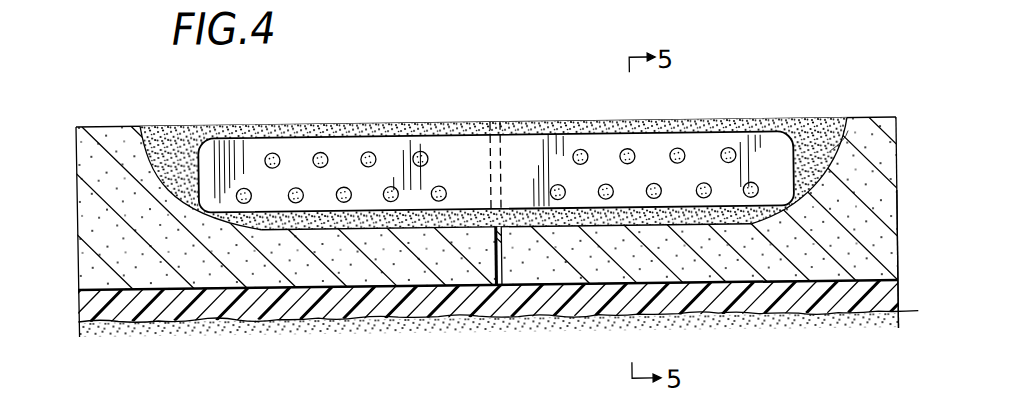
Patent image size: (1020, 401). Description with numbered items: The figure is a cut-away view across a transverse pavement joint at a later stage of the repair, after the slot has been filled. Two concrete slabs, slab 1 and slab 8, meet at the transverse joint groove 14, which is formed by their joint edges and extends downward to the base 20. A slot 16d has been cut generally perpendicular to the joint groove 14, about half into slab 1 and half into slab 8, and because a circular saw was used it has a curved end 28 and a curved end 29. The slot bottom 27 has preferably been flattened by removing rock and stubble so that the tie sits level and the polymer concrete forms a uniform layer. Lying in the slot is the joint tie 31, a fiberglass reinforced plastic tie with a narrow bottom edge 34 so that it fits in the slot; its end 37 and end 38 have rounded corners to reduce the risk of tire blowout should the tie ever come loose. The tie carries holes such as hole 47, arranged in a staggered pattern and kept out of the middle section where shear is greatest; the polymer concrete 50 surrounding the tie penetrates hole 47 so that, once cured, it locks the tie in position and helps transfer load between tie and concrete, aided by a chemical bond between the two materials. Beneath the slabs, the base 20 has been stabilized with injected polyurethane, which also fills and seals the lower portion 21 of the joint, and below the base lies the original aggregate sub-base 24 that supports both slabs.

The slab 1 is at (93, 157).
The slab 8 is at (898, 203).
The transverse joint groove 14 is at (493, 128).
The slot 16d is at (710, 130).
The base 20 is at (857, 307).
The lower portion of joint 21 is at (514, 266).
The sub-base 24 is at (799, 330).
The slot bottom 27 is at (584, 237).
The curved end 28 is at (162, 133).
The curved end 29 is at (813, 199).
The joint tie 31 is at (442, 161).
The bottom edge 34 is at (677, 220).
The end 37 is at (807, 159).
The end 38 is at (193, 150).
The hole 47 is at (582, 156).
The polymer concrete 50 is at (830, 144).